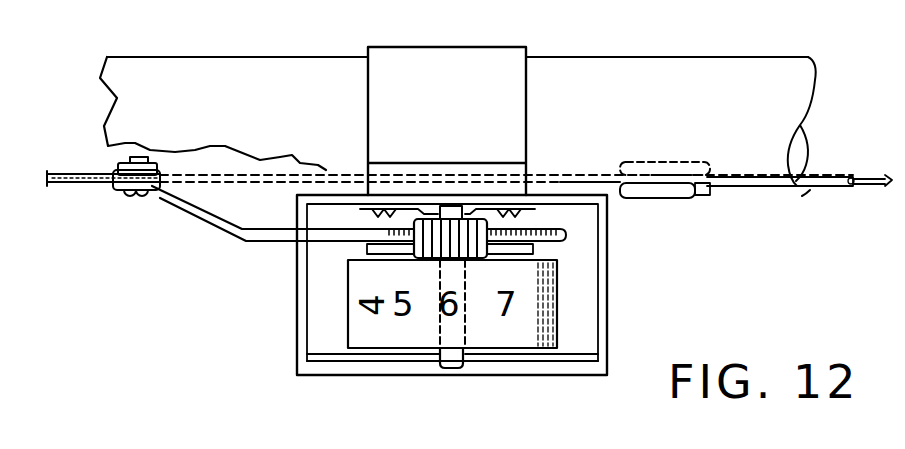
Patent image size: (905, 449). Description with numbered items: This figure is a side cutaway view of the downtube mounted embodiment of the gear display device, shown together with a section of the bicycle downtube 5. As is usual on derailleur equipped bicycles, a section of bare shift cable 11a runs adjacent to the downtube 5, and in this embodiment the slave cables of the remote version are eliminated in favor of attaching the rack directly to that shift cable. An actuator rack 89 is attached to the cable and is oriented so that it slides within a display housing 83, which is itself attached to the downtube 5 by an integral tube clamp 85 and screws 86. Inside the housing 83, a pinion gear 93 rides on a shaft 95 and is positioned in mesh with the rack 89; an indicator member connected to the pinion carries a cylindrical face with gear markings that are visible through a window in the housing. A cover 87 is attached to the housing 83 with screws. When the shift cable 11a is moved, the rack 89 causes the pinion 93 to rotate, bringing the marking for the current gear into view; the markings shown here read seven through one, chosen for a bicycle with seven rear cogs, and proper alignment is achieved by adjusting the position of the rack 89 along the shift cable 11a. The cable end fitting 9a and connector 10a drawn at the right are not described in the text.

The downtube 5 is at (230, 72).
The cable 9a is at (818, 184).
The cable connector 10a is at (683, 190).
The shift cable 11a is at (77, 190).
The actuator rack 89 is at (242, 244).
The display housing 83 is at (608, 297).
The cover 87 is at (565, 377).
The tube clamp 85 is at (445, 57).
The screws 86 is at (512, 212).
The pinion gear 93 is at (417, 257).
The shaft 95 is at (448, 370).